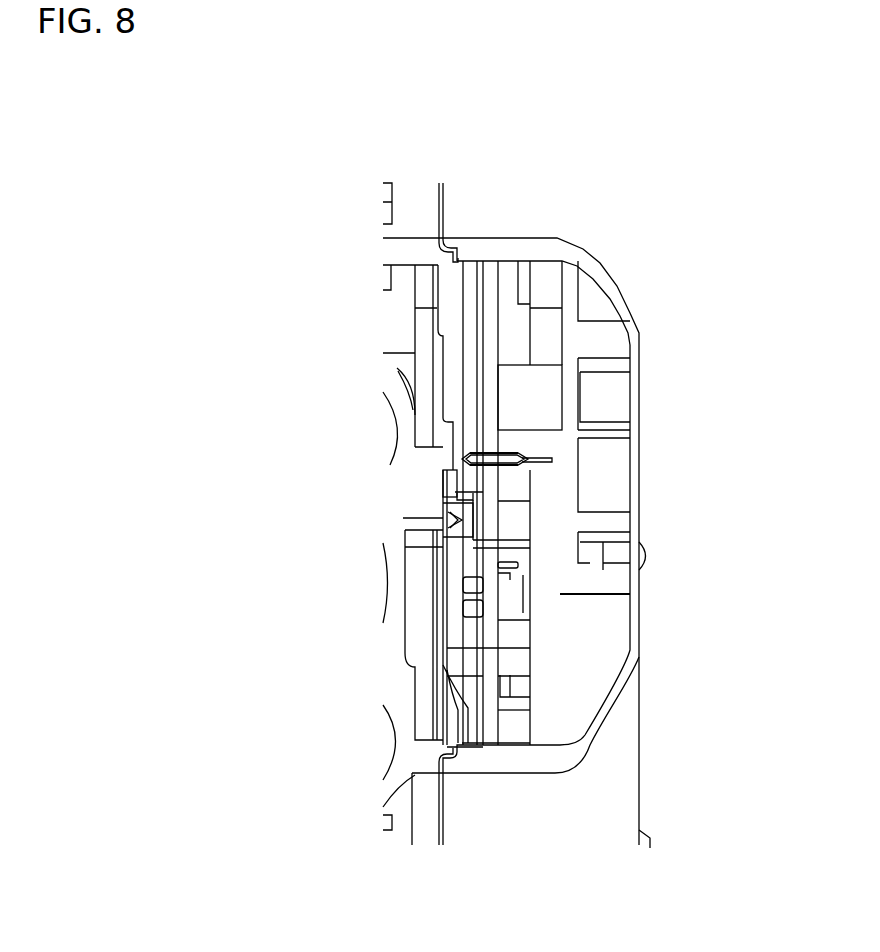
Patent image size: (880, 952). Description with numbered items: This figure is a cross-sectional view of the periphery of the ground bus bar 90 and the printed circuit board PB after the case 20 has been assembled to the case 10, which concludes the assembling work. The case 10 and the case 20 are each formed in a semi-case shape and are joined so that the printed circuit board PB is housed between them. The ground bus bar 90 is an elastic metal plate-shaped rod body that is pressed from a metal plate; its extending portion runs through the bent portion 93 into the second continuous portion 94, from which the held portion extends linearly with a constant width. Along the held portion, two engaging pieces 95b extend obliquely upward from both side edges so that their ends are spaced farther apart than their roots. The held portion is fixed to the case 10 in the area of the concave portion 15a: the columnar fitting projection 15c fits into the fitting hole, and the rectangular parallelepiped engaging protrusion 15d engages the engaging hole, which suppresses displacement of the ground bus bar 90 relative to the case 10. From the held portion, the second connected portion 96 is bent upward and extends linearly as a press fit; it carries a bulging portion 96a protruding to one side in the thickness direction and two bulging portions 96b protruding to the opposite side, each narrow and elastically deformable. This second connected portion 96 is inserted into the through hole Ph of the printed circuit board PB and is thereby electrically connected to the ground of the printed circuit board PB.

The case 10 is at (383, 837).
The case 20 is at (640, 331).
The printed circuit board PB is at (490, 349).
The second continuous portion 94 is at (452, 613).
The ground bus bar 90 is at (447, 633).
The bent portion 93 is at (463, 715).
The engaging protrusion 15d is at (443, 458).
The fitting projection 15c is at (445, 493).
The concave portion 15a is at (443, 542).
The second connected portion 96 is at (602, 502).
The bulging portion 96a is at (510, 447).
The bulging portions 96b is at (480, 464).
The through hole Ph is at (528, 462).
The engaging pieces 95b is at (455, 521).